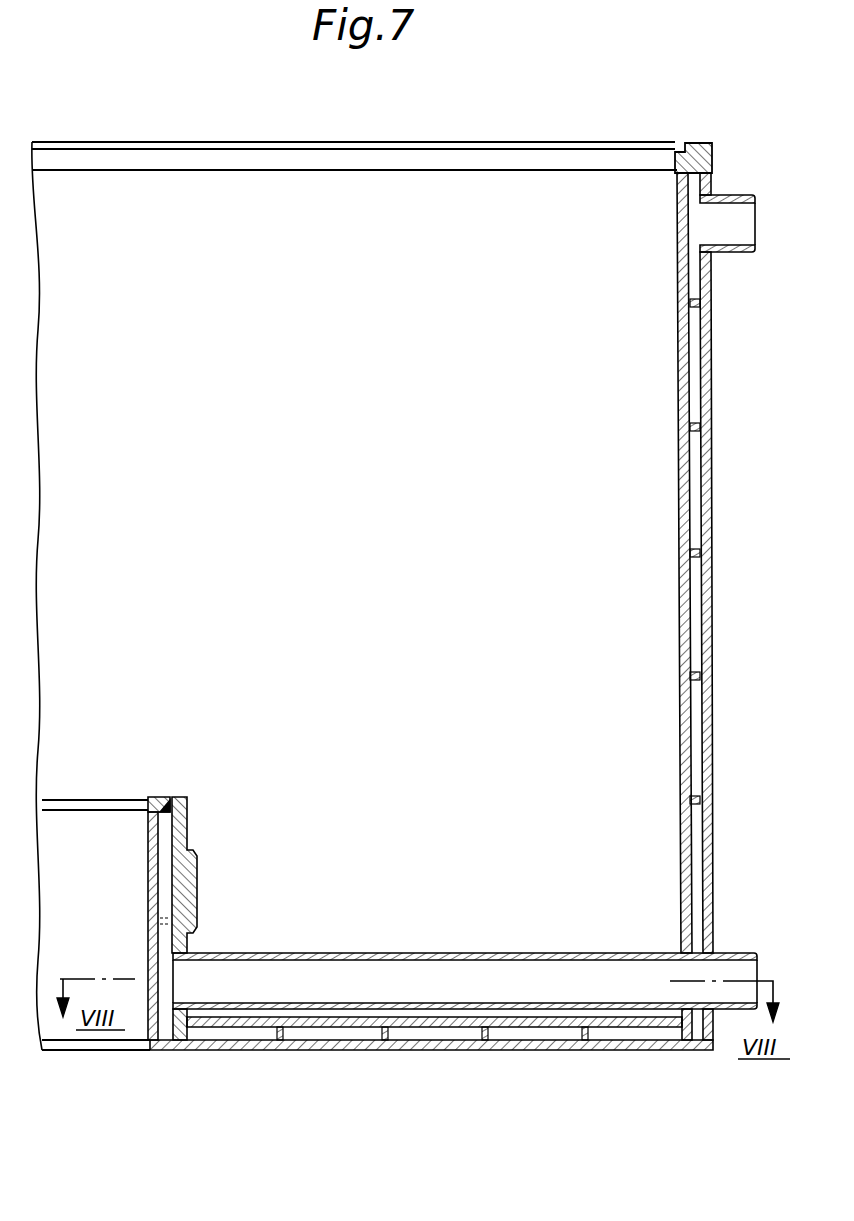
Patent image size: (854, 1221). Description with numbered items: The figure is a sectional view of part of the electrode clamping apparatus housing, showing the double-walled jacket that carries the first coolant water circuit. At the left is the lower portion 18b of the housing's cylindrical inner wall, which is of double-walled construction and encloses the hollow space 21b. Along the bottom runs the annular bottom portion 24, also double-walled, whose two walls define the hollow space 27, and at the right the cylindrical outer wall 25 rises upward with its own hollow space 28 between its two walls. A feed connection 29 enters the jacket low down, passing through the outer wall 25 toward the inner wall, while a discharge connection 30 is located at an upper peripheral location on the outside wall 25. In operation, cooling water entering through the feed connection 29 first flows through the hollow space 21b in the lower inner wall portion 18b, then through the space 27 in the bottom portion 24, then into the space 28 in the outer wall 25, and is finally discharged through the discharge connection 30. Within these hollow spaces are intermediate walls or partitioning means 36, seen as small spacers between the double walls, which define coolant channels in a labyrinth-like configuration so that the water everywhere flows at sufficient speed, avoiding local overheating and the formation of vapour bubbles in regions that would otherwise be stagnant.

The lower wall portion of the inner wall 18b is at (187, 835).
The hollow space 21b is at (165, 878).
The annular bottom portion 24 is at (500, 1050).
The cylindrical outer wall 25 is at (712, 632).
The hollow space 27 is at (230, 1035).
The hollow space 28 is at (706, 497).
The feed connection 29 is at (739, 968).
The discharge connection 30 is at (729, 213).
The intermediate walls or partitioning means 36 is at (697, 307).